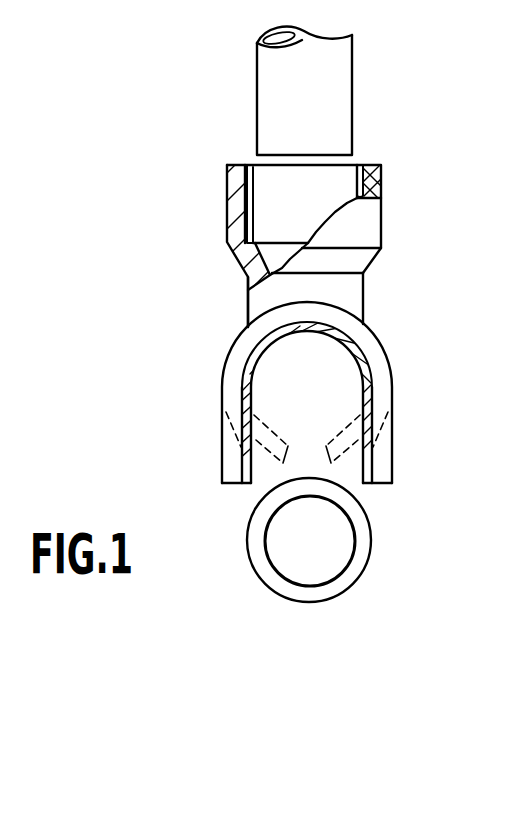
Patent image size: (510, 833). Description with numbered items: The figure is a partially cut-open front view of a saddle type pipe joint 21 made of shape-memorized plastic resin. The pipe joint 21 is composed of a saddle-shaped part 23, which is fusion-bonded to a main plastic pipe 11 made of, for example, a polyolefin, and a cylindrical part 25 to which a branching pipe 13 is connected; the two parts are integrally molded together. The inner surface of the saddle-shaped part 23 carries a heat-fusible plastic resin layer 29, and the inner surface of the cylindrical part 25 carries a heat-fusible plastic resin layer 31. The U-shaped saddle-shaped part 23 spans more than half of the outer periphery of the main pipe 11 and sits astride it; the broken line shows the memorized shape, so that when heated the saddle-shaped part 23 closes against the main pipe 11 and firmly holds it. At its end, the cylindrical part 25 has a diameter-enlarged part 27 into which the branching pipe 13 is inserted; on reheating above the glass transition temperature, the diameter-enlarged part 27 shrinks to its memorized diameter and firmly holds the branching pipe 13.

The main plastic pipe 11 is at (371, 540).
The branching pipe 13 is at (338, 103).
The pipe joint 21 is at (208, 298).
The saddle-shaped part 23 is at (378, 381).
The cylindrical part 25 is at (352, 296).
The diameter-enlarged part 27 is at (362, 228).
The heat-fusible plastic resin layer 29 is at (362, 384).
The heat-fusible plastic resin layer 31 is at (253, 186).